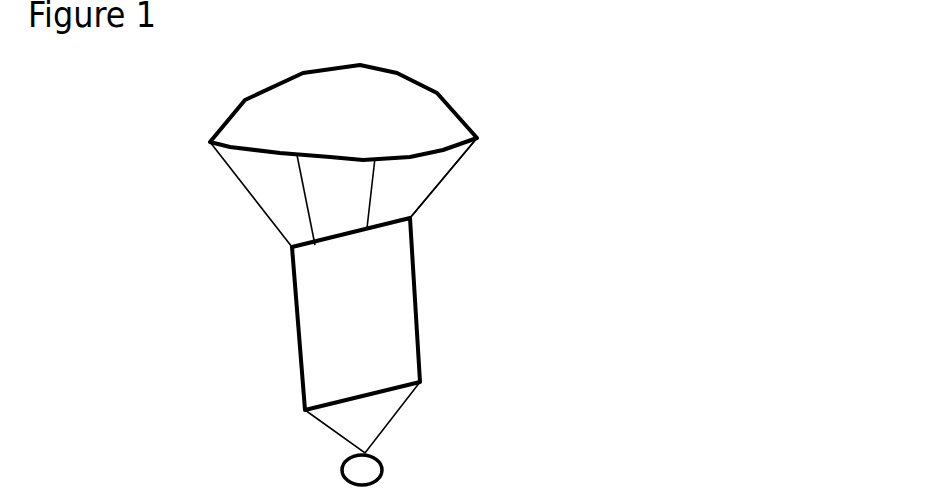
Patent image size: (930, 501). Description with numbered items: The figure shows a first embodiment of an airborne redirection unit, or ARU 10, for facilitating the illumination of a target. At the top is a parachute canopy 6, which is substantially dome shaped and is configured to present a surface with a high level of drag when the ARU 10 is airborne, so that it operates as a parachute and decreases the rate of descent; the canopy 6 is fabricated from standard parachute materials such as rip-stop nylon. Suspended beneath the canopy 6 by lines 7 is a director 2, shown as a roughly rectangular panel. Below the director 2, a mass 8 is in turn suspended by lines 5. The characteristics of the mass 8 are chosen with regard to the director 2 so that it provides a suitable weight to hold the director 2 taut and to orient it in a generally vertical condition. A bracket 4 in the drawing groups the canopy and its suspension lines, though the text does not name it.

The airborne redirection unit 10 is at (668, 228).
The director 2 is at (353, 308).
The parachute assembly 4 is at (312, 166).
The lines 5 is at (397, 415).
The parachute canopy 6 is at (408, 112).
The lines 7 is at (432, 193).
The mass 8 is at (363, 470).